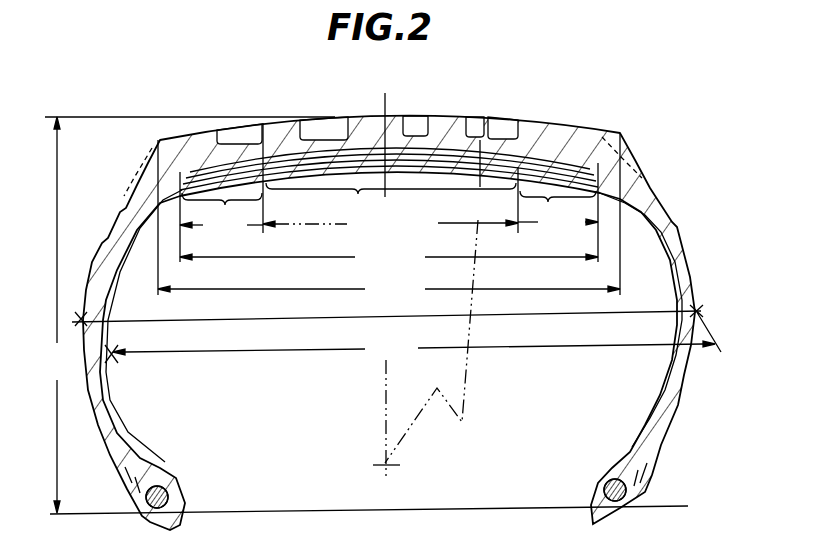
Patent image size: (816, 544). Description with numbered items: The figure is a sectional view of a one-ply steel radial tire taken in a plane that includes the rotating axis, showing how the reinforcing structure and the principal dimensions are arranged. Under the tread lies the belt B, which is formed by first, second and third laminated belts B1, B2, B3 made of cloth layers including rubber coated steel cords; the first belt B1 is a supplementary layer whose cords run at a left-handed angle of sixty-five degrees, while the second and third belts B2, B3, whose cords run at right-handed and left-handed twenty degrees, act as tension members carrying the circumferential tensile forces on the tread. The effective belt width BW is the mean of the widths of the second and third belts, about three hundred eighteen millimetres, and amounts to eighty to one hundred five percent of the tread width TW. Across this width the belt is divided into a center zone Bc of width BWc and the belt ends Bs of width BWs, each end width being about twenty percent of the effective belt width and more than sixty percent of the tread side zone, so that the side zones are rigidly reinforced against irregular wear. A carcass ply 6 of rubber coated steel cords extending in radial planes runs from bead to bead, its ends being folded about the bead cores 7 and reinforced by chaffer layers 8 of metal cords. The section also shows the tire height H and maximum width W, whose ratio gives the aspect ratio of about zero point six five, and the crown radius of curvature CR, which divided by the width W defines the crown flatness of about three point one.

The carcass ply 6 is at (673, 290).
The bead cores 7 is at (173, 490).
The chaffer layers 8 is at (122, 481).
The belt B is at (430, 173).
The first belt B1 is at (592, 168).
The second belt B2 is at (623, 152).
The third belt B3 is at (579, 128).
The ends of the belt Bs is at (389, 205).
The center zone of the belt Bc is at (391, 199).
The width of the belt ends BWs is at (389, 225).
The center zone width BWc is at (390, 228).
The effective belt width BW is at (389, 256).
The tread width TW is at (389, 285).
The maximum width of the tire W is at (410, 347).
The height of the tire H is at (366, 315).
The radius of curvature CR is at (441, 301).